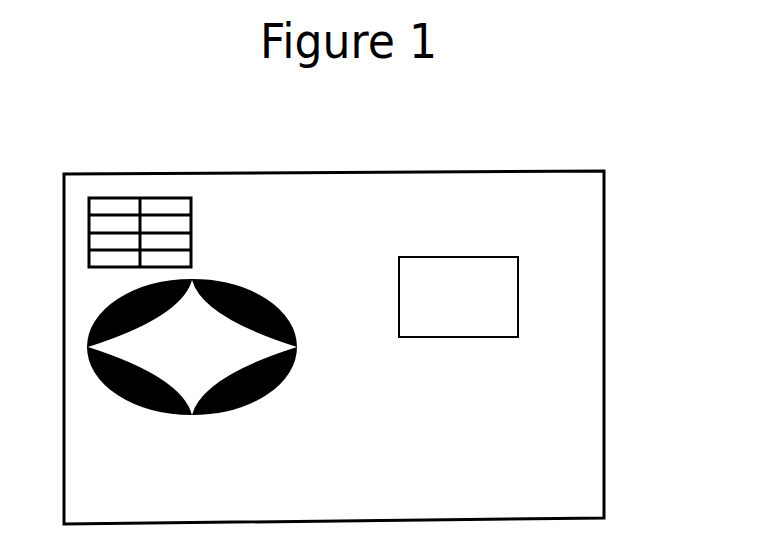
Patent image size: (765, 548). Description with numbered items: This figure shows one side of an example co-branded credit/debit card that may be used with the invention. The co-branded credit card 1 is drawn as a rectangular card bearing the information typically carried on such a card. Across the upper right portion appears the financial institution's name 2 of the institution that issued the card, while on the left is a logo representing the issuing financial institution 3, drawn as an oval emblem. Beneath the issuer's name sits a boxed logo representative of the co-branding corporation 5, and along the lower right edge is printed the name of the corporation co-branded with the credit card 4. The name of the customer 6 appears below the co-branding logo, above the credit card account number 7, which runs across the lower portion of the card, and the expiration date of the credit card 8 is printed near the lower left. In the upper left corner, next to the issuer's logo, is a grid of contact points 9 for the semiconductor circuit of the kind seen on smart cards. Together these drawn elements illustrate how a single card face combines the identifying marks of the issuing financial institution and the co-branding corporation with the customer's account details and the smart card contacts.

The co-branded credit card 1 is at (605, 247).
The financial institution's name 2 is at (437, 190).
The logo representing the issuing financial institution 3 is at (100, 310).
The name of the corporation co-branded with the credit card 4 is at (530, 472).
The logo representative of the co-branding corporation 5 is at (520, 295).
The name of the customer 6 is at (480, 372).
The credit card account number 7 is at (512, 425).
The expiration date of the credit card 8 is at (138, 483).
The contact points for the semiconductor circuit 9 is at (140, 200).